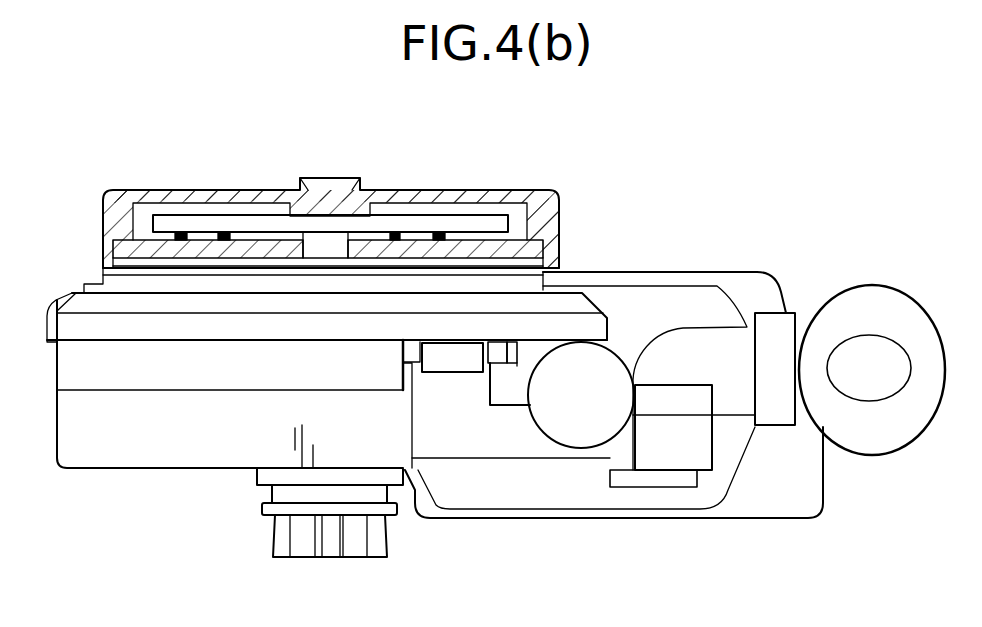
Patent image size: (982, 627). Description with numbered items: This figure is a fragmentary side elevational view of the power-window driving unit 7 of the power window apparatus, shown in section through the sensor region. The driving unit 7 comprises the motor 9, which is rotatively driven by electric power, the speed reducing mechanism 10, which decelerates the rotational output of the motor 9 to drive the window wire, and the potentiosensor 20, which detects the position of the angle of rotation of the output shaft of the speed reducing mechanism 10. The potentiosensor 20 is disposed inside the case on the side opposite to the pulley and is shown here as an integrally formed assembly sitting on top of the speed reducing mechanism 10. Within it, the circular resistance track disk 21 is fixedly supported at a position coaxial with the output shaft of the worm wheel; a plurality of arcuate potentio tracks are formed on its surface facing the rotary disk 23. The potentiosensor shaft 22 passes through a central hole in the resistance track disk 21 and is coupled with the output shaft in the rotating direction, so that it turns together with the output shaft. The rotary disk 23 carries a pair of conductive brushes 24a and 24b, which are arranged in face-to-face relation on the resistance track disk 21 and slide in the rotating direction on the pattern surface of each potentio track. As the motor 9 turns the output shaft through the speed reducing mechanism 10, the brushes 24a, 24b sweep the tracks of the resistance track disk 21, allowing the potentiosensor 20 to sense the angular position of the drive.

The power-window driving unit 7 is at (728, 250).
The motor 9 is at (530, 497).
The speed reducing mechanism 10 is at (166, 445).
The potentiosensor 20 is at (448, 175).
The resistance track disk 21 is at (535, 248).
The potentiosensor shaft 22 is at (330, 250).
The rotary disk 23 is at (170, 222).
The conductive brush 24a is at (392, 228).
The conductive brush 24b is at (220, 228).